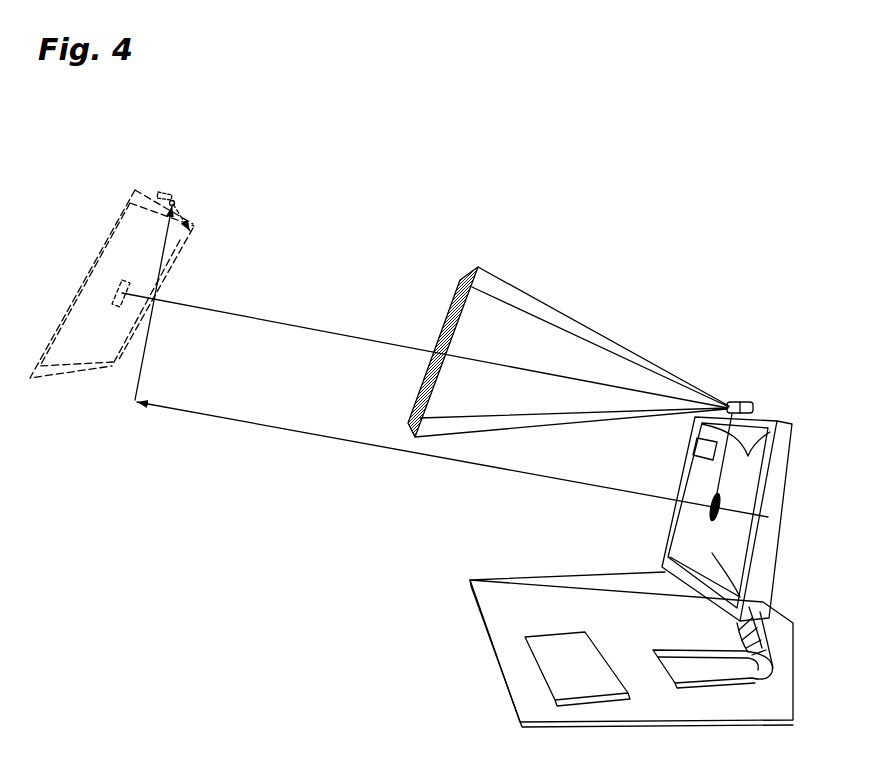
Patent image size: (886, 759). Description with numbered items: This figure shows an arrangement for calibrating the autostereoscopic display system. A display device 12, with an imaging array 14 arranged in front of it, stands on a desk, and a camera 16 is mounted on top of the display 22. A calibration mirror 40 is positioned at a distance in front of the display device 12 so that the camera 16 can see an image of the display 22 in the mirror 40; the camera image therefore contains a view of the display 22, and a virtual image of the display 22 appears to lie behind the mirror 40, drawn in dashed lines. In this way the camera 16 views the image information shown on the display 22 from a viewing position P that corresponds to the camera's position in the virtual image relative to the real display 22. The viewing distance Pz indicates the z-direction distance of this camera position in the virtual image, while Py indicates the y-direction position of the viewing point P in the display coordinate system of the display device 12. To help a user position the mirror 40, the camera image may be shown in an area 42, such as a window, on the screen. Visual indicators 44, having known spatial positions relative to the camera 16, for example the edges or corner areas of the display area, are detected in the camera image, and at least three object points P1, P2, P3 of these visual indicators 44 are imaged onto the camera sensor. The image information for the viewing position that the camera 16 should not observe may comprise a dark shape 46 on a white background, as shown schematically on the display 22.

The display device 12 is at (762, 428).
The imaging array 14 is at (698, 473).
The camera 16 is at (737, 402).
The display 22 is at (703, 367).
The calibration mirror 40 is at (473, 270).
The area 42 is at (695, 447).
The visual indicators 44 is at (720, 510).
The dark shape 46 is at (707, 507).
The viewing position P is at (180, 203).
The object point P1 is at (196, 233).
The object point P2 is at (43, 371).
The object point P3 is at (120, 365).
The position in the y-direction Py is at (166, 238).
The viewing distance Pz is at (177, 405).